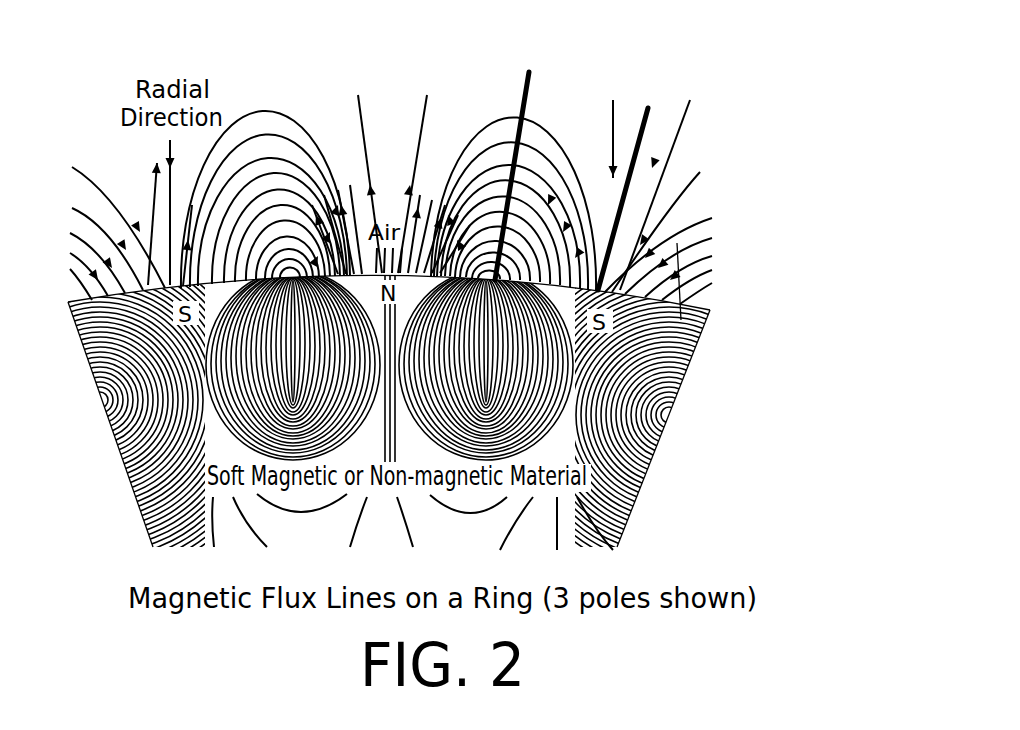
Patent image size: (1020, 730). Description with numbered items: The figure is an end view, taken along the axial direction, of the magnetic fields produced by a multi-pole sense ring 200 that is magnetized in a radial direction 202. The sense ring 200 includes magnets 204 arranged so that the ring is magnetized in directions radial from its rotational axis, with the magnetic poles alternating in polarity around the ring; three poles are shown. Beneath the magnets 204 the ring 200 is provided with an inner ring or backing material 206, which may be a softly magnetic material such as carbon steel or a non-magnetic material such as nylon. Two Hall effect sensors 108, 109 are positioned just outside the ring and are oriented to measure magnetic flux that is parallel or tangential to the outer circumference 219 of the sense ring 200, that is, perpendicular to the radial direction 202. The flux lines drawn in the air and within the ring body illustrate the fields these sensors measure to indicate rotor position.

The sense ring 200 is at (700, 406).
The radial direction 202 is at (147, 214).
The magnets 204 is at (290, 277).
The Hall effect sensor 108 is at (640, 157).
The Hall effect sensor 109 is at (530, 93).
The outer circumference 219 is at (677, 243).
The inner ring or backing material 206 is at (563, 550).